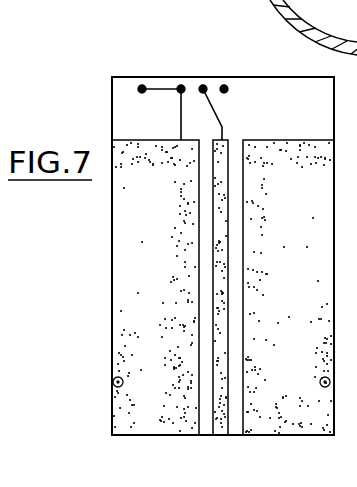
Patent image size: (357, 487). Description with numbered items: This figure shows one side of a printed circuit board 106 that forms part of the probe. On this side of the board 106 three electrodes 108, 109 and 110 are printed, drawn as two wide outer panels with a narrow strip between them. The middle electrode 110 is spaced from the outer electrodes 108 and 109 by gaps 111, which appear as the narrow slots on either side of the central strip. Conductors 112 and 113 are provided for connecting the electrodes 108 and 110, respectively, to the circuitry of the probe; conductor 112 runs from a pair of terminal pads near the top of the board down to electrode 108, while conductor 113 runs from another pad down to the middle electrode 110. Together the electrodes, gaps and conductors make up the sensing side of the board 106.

The board 106 is at (110, 268).
The electrode 108 is at (145, 158).
The electrode 109 is at (303, 152).
The electrode 110 is at (225, 157).
The gaps 111 is at (235, 283).
The conductor 112 is at (185, 98).
The conductor 113 is at (218, 110).